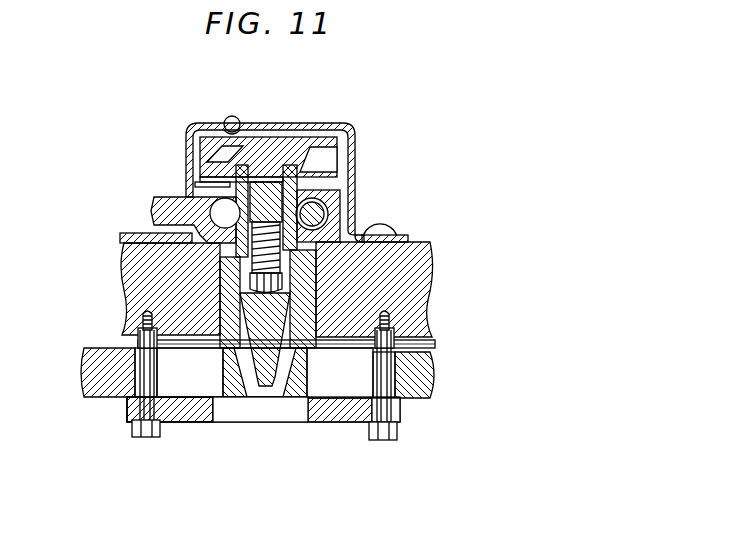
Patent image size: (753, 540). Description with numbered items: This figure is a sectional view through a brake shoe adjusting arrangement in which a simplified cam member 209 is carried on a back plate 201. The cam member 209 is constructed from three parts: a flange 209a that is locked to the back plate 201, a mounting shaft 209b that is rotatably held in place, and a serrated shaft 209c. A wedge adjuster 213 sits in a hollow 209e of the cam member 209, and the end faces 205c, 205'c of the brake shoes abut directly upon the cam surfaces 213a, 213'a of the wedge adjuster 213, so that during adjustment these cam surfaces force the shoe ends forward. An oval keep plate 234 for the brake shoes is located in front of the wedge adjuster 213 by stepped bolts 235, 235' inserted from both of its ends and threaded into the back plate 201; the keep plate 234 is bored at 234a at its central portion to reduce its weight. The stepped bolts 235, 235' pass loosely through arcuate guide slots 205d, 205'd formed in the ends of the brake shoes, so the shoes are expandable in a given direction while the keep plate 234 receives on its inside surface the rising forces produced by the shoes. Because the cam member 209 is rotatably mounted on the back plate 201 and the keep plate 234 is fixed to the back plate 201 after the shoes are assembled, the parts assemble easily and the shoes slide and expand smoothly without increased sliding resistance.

The serrated shaft 209c is at (355, 192).
The back plate 201 is at (417, 257).
The cam member 209 is at (210, 276).
The mounting shaft 209b is at (380, 273).
The cam surface 213'a is at (142, 302).
The cam surface 213a is at (288, 327).
The flange 209a is at (370, 346).
The hollow 209e is at (345, 380).
The arcuate guide slot 205d is at (422, 402).
The arcuate guide slot 205'd is at (179, 428).
The stepped bolt 235 is at (424, 385).
The stepped bolt 235' is at (114, 386).
The wedge adjuster 213 is at (228, 316).
The end face 205'c is at (248, 379).
The end face 205c is at (270, 362).
The bore 234a is at (298, 410).
The keep plate 234 is at (303, 428).